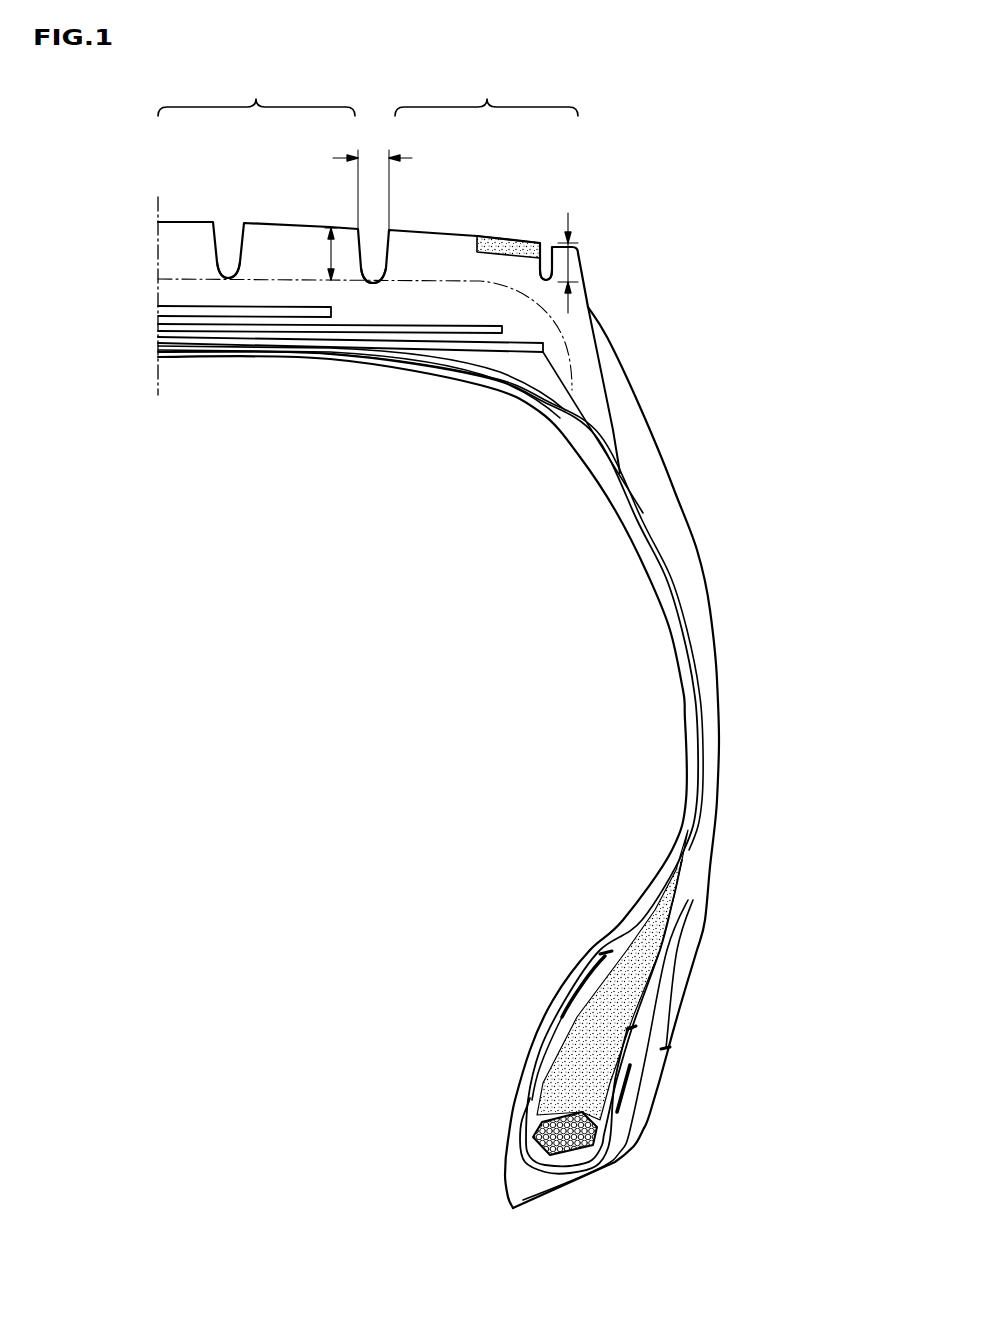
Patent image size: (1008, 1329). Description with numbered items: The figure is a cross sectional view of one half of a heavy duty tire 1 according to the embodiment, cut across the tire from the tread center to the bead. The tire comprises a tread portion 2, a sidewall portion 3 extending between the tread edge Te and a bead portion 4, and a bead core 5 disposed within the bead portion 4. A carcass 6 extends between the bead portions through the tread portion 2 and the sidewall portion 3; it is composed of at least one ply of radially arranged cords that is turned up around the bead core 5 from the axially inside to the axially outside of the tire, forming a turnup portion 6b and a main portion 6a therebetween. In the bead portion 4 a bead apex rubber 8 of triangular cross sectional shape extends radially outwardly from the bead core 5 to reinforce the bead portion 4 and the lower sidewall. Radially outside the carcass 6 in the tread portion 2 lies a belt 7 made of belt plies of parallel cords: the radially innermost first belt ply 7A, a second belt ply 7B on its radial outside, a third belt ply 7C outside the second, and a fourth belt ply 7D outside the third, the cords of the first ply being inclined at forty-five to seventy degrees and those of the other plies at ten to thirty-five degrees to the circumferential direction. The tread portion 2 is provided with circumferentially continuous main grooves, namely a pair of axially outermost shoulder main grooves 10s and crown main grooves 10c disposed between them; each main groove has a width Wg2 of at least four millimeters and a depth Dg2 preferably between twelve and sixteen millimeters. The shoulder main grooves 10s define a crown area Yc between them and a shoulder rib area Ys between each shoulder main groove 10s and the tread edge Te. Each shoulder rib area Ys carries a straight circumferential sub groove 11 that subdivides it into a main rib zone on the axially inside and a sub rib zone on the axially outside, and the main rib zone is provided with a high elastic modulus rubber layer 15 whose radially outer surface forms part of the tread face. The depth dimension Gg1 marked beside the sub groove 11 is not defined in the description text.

The heavy duty tire 1 is at (673, 253).
The tread portion 2 is at (291, 225).
The sidewall portion 3 is at (730, 651).
The bead portion 4 is at (493, 1111).
The bead core 5 is at (575, 1135).
The carcass 6 is at (430, 763).
The main portion 6a is at (700, 750).
The turnup portion 6b is at (636, 1032).
The belt 7 is at (310, 348).
The first belt ply 7A is at (326, 382).
The second belt ply 7B is at (158, 340).
The third belt ply 7C is at (158, 327).
The fourth belt ply 7D is at (158, 308).
The bead apex rubber 8 is at (590, 1020).
The crown main groove 10c is at (229, 247).
The shoulder main groove 10s is at (374, 250).
The sub groove 11 is at (543, 277).
The high elastic modulus rubber layer 15 is at (509, 246).
The tread edge Te is at (586, 238).
The groove depth of shoulder narrow groove Gg1 is at (577, 262).
The depth of main groove Dg2 is at (307, 254).
The width of main groove Wg2 is at (372, 182).
The crown area Yc is at (256, 94).
The shoulder rib area Ys is at (486, 94).